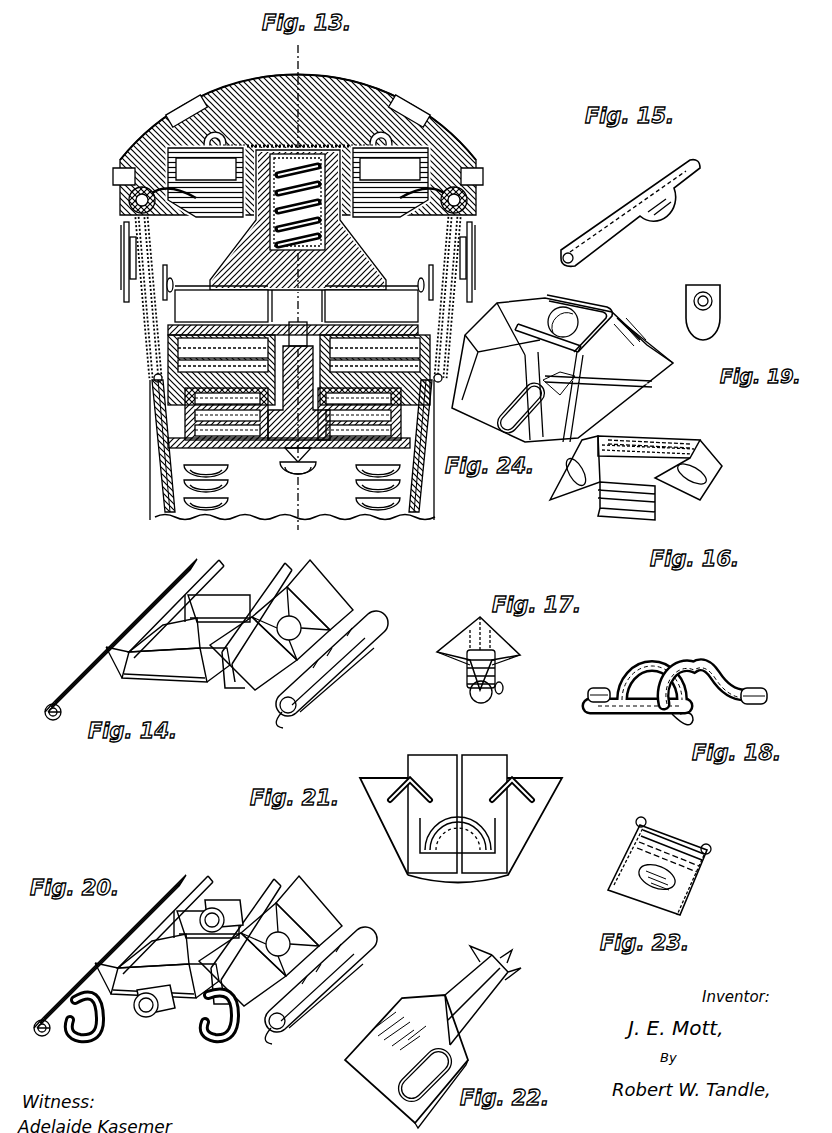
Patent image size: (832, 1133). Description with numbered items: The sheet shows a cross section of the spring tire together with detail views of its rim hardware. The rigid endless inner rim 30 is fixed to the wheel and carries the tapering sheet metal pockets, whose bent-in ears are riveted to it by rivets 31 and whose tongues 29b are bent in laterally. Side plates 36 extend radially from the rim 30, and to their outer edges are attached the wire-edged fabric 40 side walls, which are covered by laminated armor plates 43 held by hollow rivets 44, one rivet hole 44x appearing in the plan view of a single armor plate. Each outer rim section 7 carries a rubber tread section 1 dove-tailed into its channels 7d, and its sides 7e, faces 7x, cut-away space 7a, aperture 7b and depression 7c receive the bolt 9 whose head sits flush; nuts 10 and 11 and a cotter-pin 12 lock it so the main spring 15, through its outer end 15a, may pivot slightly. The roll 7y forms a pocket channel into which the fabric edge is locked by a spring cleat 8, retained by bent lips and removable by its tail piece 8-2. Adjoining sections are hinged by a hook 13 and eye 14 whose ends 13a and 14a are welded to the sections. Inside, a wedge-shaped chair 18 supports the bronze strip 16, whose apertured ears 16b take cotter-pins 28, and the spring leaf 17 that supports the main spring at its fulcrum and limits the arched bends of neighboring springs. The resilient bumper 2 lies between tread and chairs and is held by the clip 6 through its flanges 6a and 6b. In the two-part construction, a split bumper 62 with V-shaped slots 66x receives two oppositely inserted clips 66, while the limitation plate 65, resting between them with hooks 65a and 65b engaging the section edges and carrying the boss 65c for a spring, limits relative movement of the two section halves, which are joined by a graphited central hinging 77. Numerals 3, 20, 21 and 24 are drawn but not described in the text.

In FIG. 13, the tread section 1 is at (340, 74).
In FIG. 13, the resilient bumper 2 is at (298, 220).
In FIG. 13, the central axis 3 is at (295, 290).
In FIG. 16, the clip 6 is at (636, 468).
In FIG. 16, the flange of clip 6a is at (680, 444).
In FIG. 16, the flange of clip 6b is at (612, 515).
In FIG. 13, the outer rim section 7 is at (302, 146).
In FIG. 14, the outer rim section 7 is at (200, 635).
In FIG. 20, the outer rim section 7 is at (205, 959).
In FIG. 14, the cut-away space 7a is at (179, 636).
In FIG. 20, the cut-away space 7a is at (172, 940).
In FIG. 14, the aperture 7b is at (291, 623).
In FIG. 14, the depression 7c is at (285, 623).
In FIG. 14, the dove-tail channel 7d is at (96, 675).
In FIG. 20, the dove-tail channel 7d is at (252, 1010).
In FIG. 14, the dove-tail side 7e is at (174, 628).
In FIG. 20, the dove-tail side 7e is at (161, 936).
In FIG. 14, the face 7x is at (85, 672).
In FIG. 20, the face 7x is at (76, 978).
In FIG. 14, the roll 7y is at (60, 700).
In FIG. 20, the roll 7y is at (42, 1012).
In FIG. 13, the spring cleat 8 is at (134, 204).
In FIG. 15, the spring cleat 8 is at (592, 217).
In FIG. 15, the tail piece 8-2 is at (651, 222).
In FIG. 13, the bolt 9 is at (298, 182).
In FIG. 17, the bolt 9 is at (458, 666).
In FIG. 13, the nut 10 is at (403, 230).
In FIG. 13, the nut 11 is at (216, 222).
In FIG. 17, the cotter-pin 12 is at (504, 688).
In FIG. 18, the hook 13 is at (708, 666).
In FIG. 20, the hook 13 is at (78, 1036).
In FIG. 18, the hook end 13a is at (768, 682).
In FIG. 18, the eye 14 is at (634, 668).
In FIG. 18, the eye end 14a is at (598, 688).
In FIG. 13, the main spring 15 is at (293, 332).
In FIG. 13, the outer end of main spring 15a is at (299, 369).
In FIG. 13, the bearing strip 16 is at (192, 238).
In FIG. 13, the ear 16b is at (307, 275).
In FIG. 13, the spring leaf 17 is at (252, 332).
In FIG. 13, the chair 18 is at (299, 376).
In FIG. 13, the partition plate 20 is at (293, 323).
In FIG. 13, the central opening 21 is at (296, 328).
In FIG. 13, the spacer 24 is at (293, 414).
In FIG. 13, the cotter-pin 28 is at (204, 286).
In FIG. 13, the tongue 29b is at (268, 445).
In FIG. 13, the inner rim 30 is at (332, 448).
In FIG. 13, the rivet 31 is at (228, 480).
In FIG. 13, the side plate 36 is at (152, 410).
In FIG. 13, the fabric 40 is at (146, 245).
In FIG. 13, the armor plate 43 is at (143, 322).
In FIG. 19, the armor plate 43 is at (703, 313).
In FIG. 13, the hollow rivet 44 is at (298, 258).
In FIG. 19, the pin hole 44x is at (714, 296).
In FIG. 24, the split bumper 62 is at (655, 386).
In FIG. 21, the split bumper 62 is at (461, 819).
In FIG. 24, the limitation plate 65 is at (570, 305).
In FIG. 23, the limitation plate 65 is at (612, 898).
In FIG. 24, the hook 65a is at (522, 322).
In FIG. 23, the hook 65a is at (646, 822).
In FIG. 24, the hook 65b is at (606, 300).
In FIG. 23, the hook 65b is at (708, 845).
In FIG. 24, the boss 65c is at (585, 303).
In FIG. 23, the boss 65c is at (662, 888).
In FIG. 24, the clip 66 is at (630, 330).
In FIG. 22, the clip 66 is at (433, 1037).
In FIG. 21, the slot 66x is at (408, 778).
In FIG. 20, the central hinging 77 is at (146, 1017).